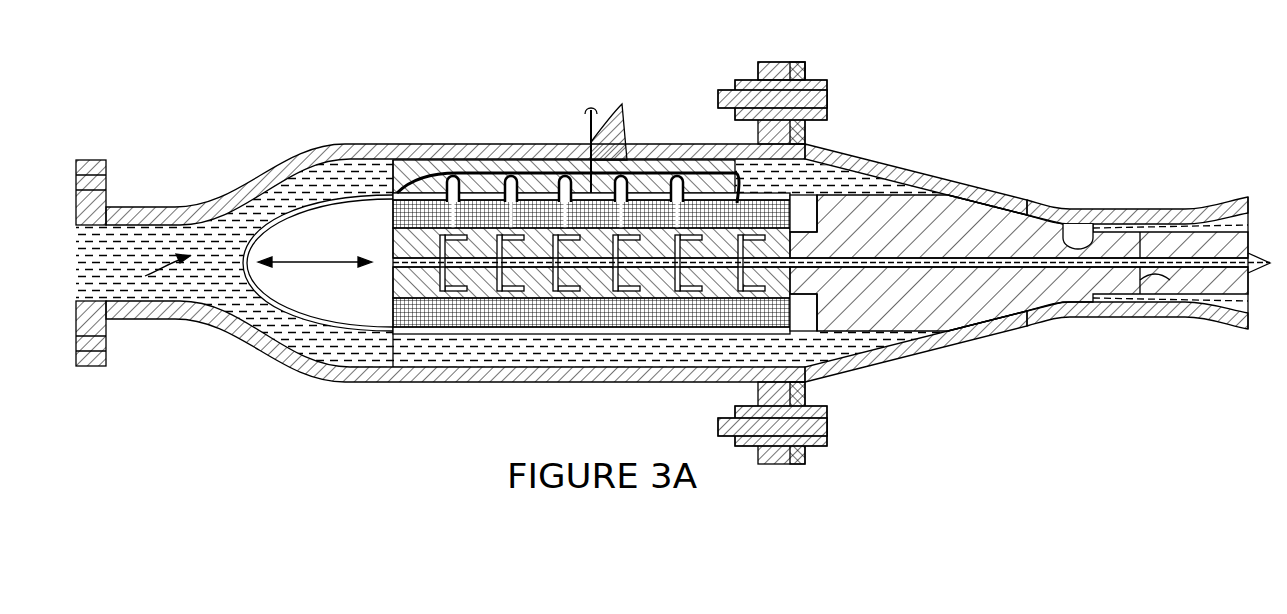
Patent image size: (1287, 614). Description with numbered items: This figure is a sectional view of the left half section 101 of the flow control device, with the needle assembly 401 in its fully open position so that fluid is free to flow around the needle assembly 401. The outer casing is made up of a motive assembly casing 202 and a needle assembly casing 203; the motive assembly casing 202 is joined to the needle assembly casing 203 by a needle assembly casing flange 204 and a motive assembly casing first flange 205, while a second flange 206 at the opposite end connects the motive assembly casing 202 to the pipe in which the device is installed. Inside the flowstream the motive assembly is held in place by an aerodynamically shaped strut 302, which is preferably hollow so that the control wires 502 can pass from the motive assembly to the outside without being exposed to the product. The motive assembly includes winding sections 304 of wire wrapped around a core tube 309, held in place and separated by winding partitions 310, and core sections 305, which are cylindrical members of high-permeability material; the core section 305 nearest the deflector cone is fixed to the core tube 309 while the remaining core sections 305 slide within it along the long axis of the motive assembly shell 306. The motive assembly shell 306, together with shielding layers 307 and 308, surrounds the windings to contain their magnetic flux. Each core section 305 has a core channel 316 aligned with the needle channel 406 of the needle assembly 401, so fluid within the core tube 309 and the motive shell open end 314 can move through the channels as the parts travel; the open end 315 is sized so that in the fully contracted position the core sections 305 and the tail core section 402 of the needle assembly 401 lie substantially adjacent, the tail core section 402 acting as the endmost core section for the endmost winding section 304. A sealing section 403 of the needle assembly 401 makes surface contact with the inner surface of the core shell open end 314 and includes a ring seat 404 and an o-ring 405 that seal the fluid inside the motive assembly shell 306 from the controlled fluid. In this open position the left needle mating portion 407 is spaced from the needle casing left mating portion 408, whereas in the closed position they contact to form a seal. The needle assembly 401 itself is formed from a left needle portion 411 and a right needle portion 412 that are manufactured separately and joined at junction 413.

The left half section 101 is at (673, 253).
The motive assembly casing 202 is at (246, 160).
The needle assembly casing 203 is at (1157, 208).
The needle assembly casing flange 204 is at (832, 72).
The motive assembly casing first flange 205 is at (763, 461).
The inlet flange 206 is at (103, 160).
The strut 302 is at (382, 159).
The winding sections 304 is at (745, 330).
The core sections 305 is at (615, 266).
The motive assembly shell 306 is at (415, 162).
The shielding layer 307 is at (560, 160).
The shielding layer 308 is at (541, 160).
The core tube 309 is at (762, 72).
The winding partitions 310 is at (516, 144).
The core shell open end 314 is at (866, 163).
The open end 315 is at (808, 195).
The core channel 316 is at (691, 160).
The needle assembly 401 is at (1017, 224).
The tail core section 402 is at (828, 192).
The sealing section 403 is at (915, 165).
The ring seat 404 is at (927, 330).
The o-ring 405 is at (835, 325).
The needle channel 406 is at (982, 268).
The left needle mating portion 407 is at (1058, 224).
The needle casing left mating portion 408 is at (1097, 232).
The left needle portion 411 is at (1090, 268).
The right needle portion 412 is at (1233, 290).
The junction 413 is at (1164, 284).
The control wires 502 is at (615, 136).